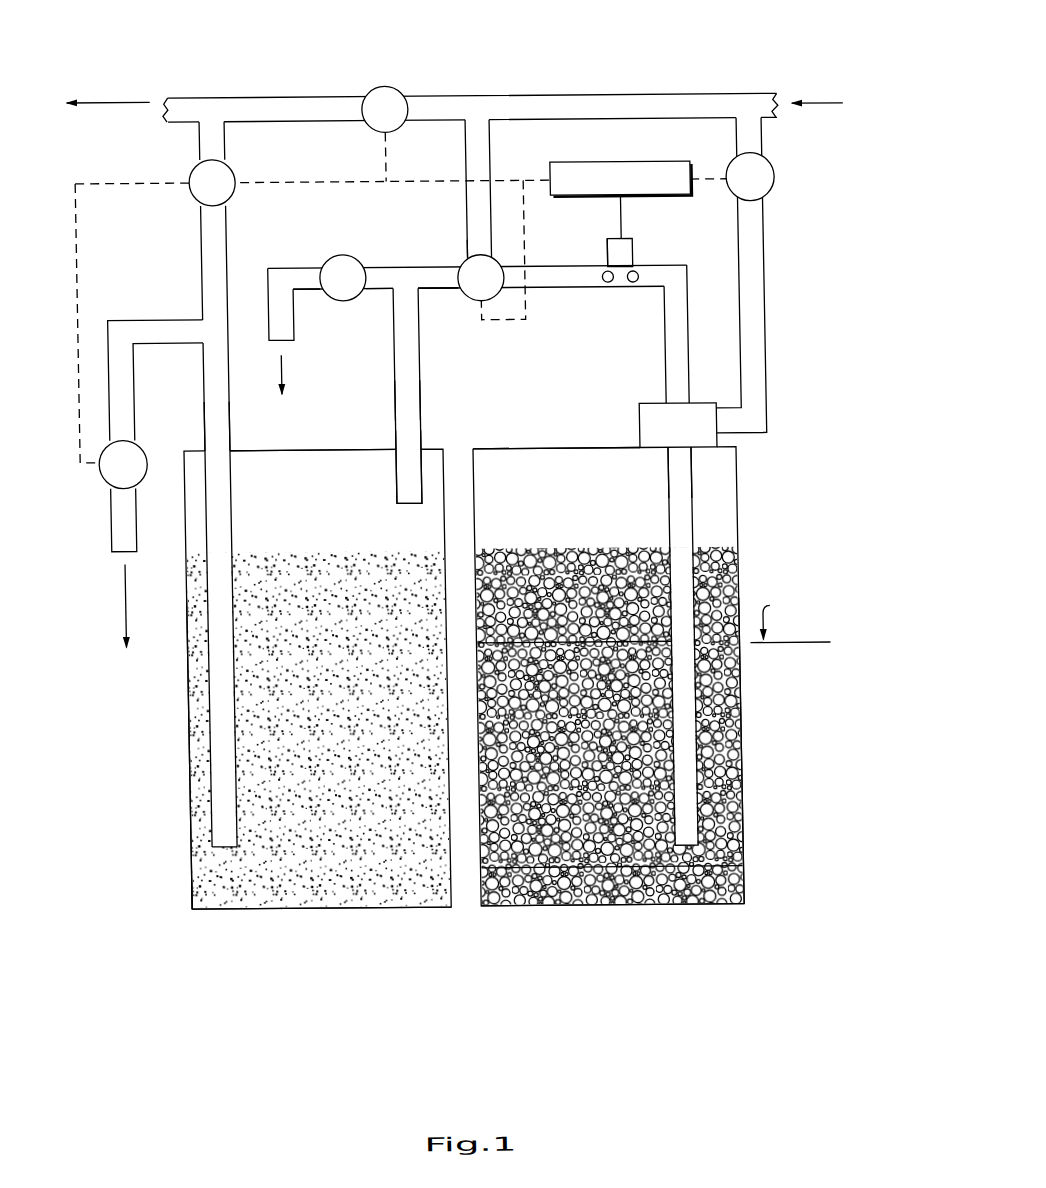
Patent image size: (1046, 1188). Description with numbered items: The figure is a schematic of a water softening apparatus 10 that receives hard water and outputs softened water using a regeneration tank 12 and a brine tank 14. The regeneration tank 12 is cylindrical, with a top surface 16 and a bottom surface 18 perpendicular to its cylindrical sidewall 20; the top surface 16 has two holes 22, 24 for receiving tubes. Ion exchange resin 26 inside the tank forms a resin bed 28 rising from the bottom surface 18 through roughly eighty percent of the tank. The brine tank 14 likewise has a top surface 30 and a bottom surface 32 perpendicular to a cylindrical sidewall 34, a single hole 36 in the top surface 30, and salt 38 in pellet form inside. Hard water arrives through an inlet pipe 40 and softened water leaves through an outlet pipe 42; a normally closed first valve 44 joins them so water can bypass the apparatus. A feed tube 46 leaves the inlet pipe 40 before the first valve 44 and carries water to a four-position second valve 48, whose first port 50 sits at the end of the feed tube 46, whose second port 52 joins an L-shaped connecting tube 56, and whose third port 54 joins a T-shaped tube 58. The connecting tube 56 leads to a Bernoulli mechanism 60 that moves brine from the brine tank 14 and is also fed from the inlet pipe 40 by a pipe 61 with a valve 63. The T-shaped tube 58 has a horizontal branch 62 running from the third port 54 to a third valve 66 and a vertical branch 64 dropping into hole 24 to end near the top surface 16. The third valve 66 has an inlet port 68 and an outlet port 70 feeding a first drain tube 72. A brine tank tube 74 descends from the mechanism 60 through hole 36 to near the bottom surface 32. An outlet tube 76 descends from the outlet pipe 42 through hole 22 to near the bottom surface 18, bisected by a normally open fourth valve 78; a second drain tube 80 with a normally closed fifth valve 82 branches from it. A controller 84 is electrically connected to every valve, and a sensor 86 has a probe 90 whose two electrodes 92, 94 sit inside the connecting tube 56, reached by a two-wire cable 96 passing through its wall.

The water softening apparatus 10 is at (705, 47).
The regeneration tank 12 is at (327, 447).
The brine tank 14 is at (558, 448).
The top surface 16 is at (275, 449).
The bottom surface 18 is at (358, 907).
The cylindrical sidewall 20 is at (185, 733).
The hole 22 is at (200, 444).
The hole 24 is at (430, 445).
The ion exchange resin 26 is at (331, 869).
The resin bed 28 is at (202, 878).
The top surface 30 is at (615, 449).
The bottom surface 32 is at (606, 906).
The cylindrical sidewall 34 is at (738, 818).
The hole 36 is at (694, 455).
The salt 38 is at (561, 899).
The inlet pipe 40 is at (599, 94).
The outlet pipe 42 is at (265, 95).
The first valve 44 is at (402, 90).
The feed tube 46 is at (497, 150).
The second valve 48 is at (465, 300).
The first port 50 is at (473, 258).
The second port 52 is at (506, 276).
The third port 54 is at (448, 282).
The connecting tube 56 is at (674, 352).
The T-shaped tube 58 is at (402, 326).
The mechanism 60 is at (653, 408).
The pipe 61 is at (770, 262).
The horizontal branch 62 is at (418, 268).
The valve 63 is at (775, 168).
The vertical branch 64 is at (413, 395).
The third valve 66 is at (346, 256).
The inlet port 68 is at (382, 272).
The outlet port 70 is at (325, 271).
The first drain tube 72 is at (278, 317).
The brine tank tube 74 is at (682, 539).
The outlet tube 76 is at (204, 231).
The fourth valve 78 is at (230, 166).
The second drain tube 80 is at (154, 318).
The fifth valve 82 is at (139, 480).
The controller 84 is at (567, 163).
The sensor 86 is at (643, 255).
The probe 90 is at (607, 257).
The electrode 92 is at (607, 285).
The electrode 94 is at (633, 285).
The two-wire cable 96 is at (626, 220).